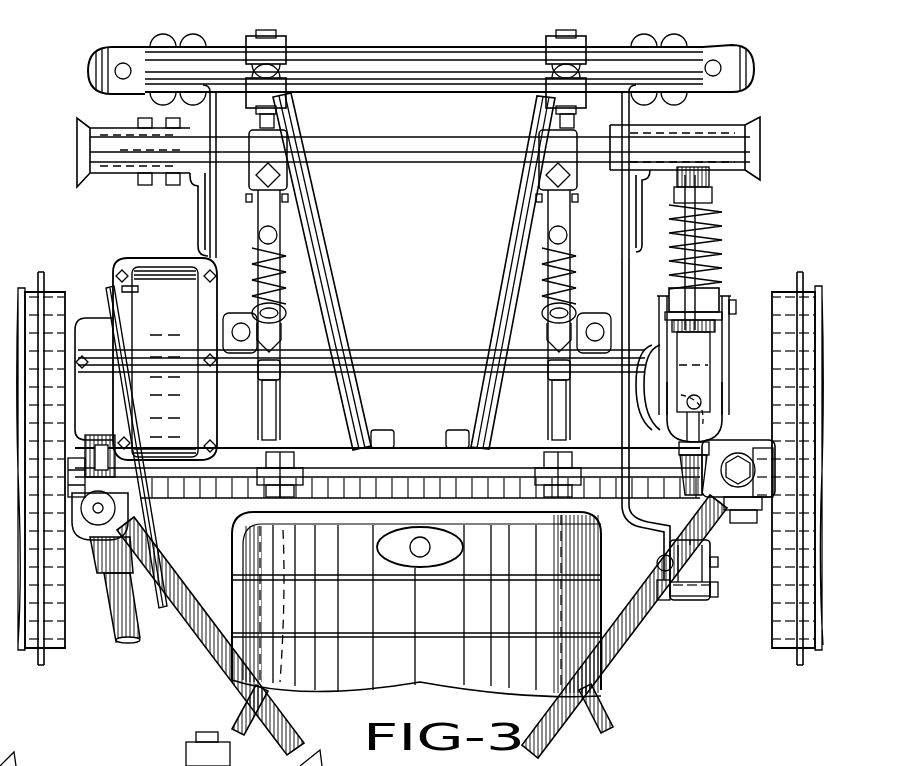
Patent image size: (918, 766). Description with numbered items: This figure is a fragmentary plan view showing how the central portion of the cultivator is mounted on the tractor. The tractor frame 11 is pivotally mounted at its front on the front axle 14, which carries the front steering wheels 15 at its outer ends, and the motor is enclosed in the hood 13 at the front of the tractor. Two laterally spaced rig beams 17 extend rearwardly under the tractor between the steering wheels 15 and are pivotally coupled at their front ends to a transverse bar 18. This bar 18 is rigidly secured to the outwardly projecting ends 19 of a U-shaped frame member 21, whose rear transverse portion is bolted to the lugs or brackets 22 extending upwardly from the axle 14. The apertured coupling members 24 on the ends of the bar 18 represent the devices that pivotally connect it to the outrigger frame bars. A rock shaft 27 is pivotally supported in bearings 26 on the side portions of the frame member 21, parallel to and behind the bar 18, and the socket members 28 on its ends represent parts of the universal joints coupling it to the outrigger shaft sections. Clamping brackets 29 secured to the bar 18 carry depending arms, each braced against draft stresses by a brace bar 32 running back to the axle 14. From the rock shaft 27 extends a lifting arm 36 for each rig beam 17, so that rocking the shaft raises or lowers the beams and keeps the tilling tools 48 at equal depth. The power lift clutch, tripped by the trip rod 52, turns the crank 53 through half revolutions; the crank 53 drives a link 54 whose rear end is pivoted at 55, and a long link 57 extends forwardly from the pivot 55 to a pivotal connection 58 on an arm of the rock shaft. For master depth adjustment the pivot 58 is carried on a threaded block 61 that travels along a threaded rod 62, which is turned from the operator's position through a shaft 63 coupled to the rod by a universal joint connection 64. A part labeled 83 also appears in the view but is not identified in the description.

The tractor frame 11 is at (232, 540).
The housing or hood 13 is at (614, 660).
The front axle 14 is at (430, 450).
The front steering wheels 15 is at (56, 300).
The rig beams 17 is at (244, 712).
The transverse bar 18 is at (405, 52).
The outwardly projecting ends 19 is at (207, 88).
The U-shaped frame member 21 is at (416, 468).
The lugs or brackets 22 is at (302, 470).
The apertured coupling members 24 is at (96, 62).
The bearings 26 is at (200, 205).
The rock shaft 27 is at (440, 160).
The socket members 28 is at (82, 140).
The clamping brackets 29 is at (286, 42).
The brace bar 32 is at (332, 300).
The lifting arm 36 is at (278, 240).
The tilling tools 48 is at (262, 250).
The trip rod 52 is at (160, 604).
The crank 53 is at (648, 362).
The link 54 is at (658, 530).
The pivot 55 is at (712, 592).
The long link 57 is at (663, 296).
The pivotal connection 58 is at (736, 306).
The threaded block 61 is at (712, 296).
The threaded rod 62 is at (712, 248).
The shaft 63 is at (716, 520).
The universal joint connection 64 is at (722, 428).
The nut 83 is at (192, 752).